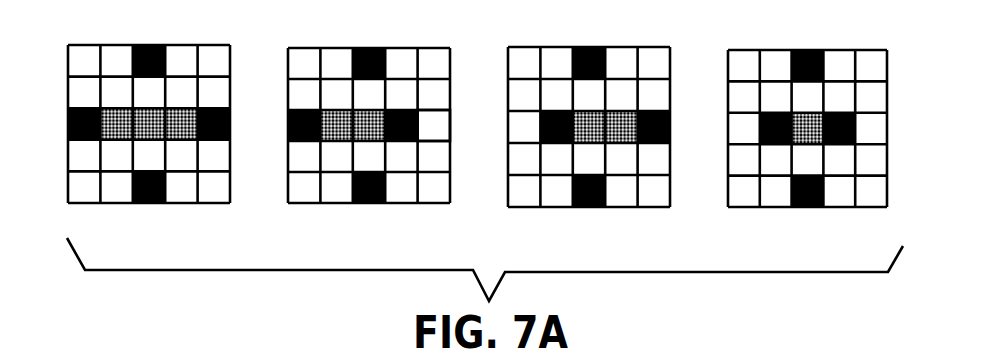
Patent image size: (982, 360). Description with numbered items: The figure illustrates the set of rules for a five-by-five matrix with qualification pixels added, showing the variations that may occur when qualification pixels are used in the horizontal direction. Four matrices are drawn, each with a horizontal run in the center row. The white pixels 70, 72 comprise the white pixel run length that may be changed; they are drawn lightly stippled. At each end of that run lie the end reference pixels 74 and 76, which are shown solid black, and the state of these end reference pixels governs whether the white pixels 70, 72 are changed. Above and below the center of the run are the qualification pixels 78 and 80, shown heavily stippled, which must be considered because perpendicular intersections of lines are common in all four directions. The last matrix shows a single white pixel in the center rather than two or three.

The white pixel 70 is at (332, 108).
The white pixel 72 is at (372, 143).
The end reference pixel 74 is at (288, 125).
The end reference pixel 76 is at (422, 120).
The qualification pixel 78 is at (373, 48).
The qualification pixel 80 is at (375, 203).